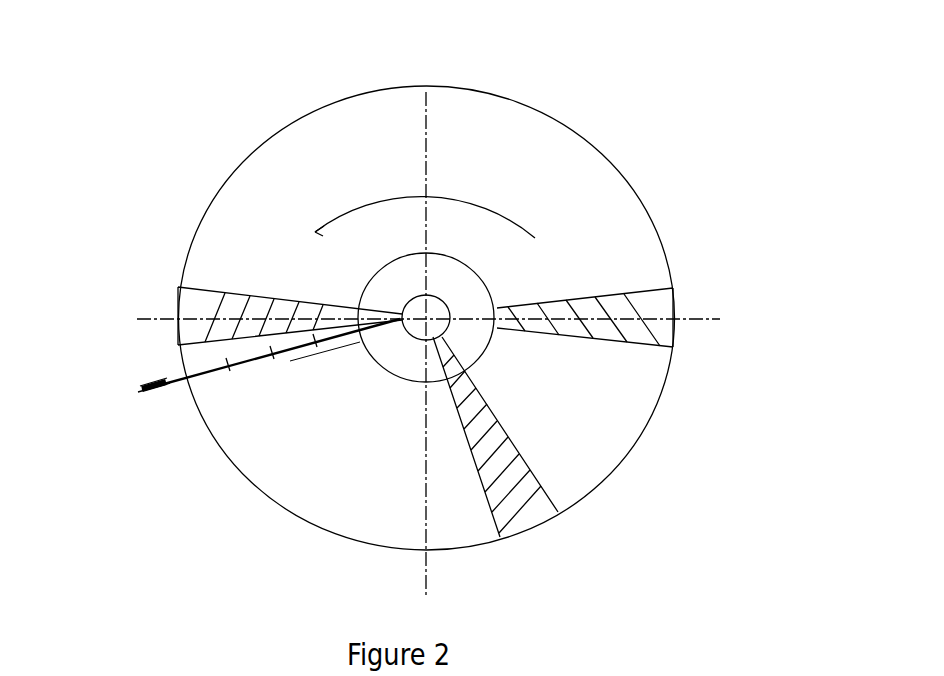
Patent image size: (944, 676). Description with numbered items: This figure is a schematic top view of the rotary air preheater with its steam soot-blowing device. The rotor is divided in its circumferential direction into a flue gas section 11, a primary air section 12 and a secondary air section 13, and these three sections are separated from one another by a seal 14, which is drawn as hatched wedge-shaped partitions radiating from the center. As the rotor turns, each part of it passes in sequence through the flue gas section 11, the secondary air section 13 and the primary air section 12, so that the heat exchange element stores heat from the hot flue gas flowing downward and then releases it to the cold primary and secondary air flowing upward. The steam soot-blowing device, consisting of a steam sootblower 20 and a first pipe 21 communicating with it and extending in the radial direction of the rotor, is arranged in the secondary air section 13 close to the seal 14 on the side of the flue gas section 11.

The flue gas section 11 is at (557, 183).
The primary air section 12 is at (583, 420).
The secondary air section 13 is at (332, 475).
The seal 14 is at (205, 306).
The steam sootblower 20 is at (140, 383).
The first pipe 21 is at (222, 376).